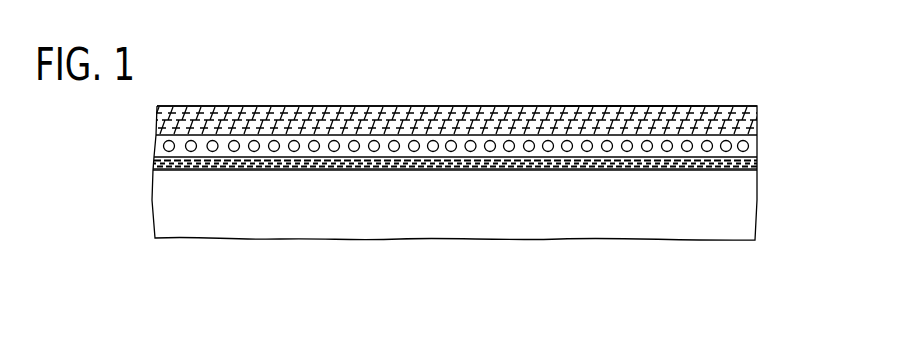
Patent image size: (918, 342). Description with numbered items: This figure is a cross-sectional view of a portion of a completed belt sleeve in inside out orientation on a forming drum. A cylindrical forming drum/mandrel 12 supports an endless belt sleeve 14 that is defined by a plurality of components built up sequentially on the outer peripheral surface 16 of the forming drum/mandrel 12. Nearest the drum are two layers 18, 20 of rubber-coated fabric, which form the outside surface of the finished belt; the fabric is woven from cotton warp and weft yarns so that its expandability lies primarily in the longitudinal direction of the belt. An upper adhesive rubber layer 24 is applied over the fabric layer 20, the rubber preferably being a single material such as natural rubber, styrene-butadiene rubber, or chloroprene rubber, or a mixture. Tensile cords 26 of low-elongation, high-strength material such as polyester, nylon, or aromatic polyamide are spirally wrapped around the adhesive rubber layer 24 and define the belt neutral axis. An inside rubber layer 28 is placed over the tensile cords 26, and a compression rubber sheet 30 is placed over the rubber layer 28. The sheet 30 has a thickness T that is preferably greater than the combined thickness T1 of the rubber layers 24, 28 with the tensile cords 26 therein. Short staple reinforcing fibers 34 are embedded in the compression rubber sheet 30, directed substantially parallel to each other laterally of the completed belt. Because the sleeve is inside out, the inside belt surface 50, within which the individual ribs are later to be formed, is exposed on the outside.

The forming drum/mandrel 12 is at (437, 223).
The endless belt sleeve 14 is at (640, 106).
The outer peripheral surface 16 is at (223, 155).
The rubber-coated fabric layer 18 is at (303, 170).
The rubber-coated fabric layer 20 is at (327, 170).
The upper adhesive rubber layer 24 is at (260, 172).
The tensile cords 26 is at (450, 140).
The inside rubber layer 28 is at (293, 133).
The compression rubber sheet 30 is at (497, 110).
The short staple reinforcing fibers 34 is at (368, 115).
The inside belt surface 50 is at (605, 110).
The thickness of compression rubber sheet T is at (577, 135).
The combined thickness of rubber layers with tensile cord T1 is at (692, 170).